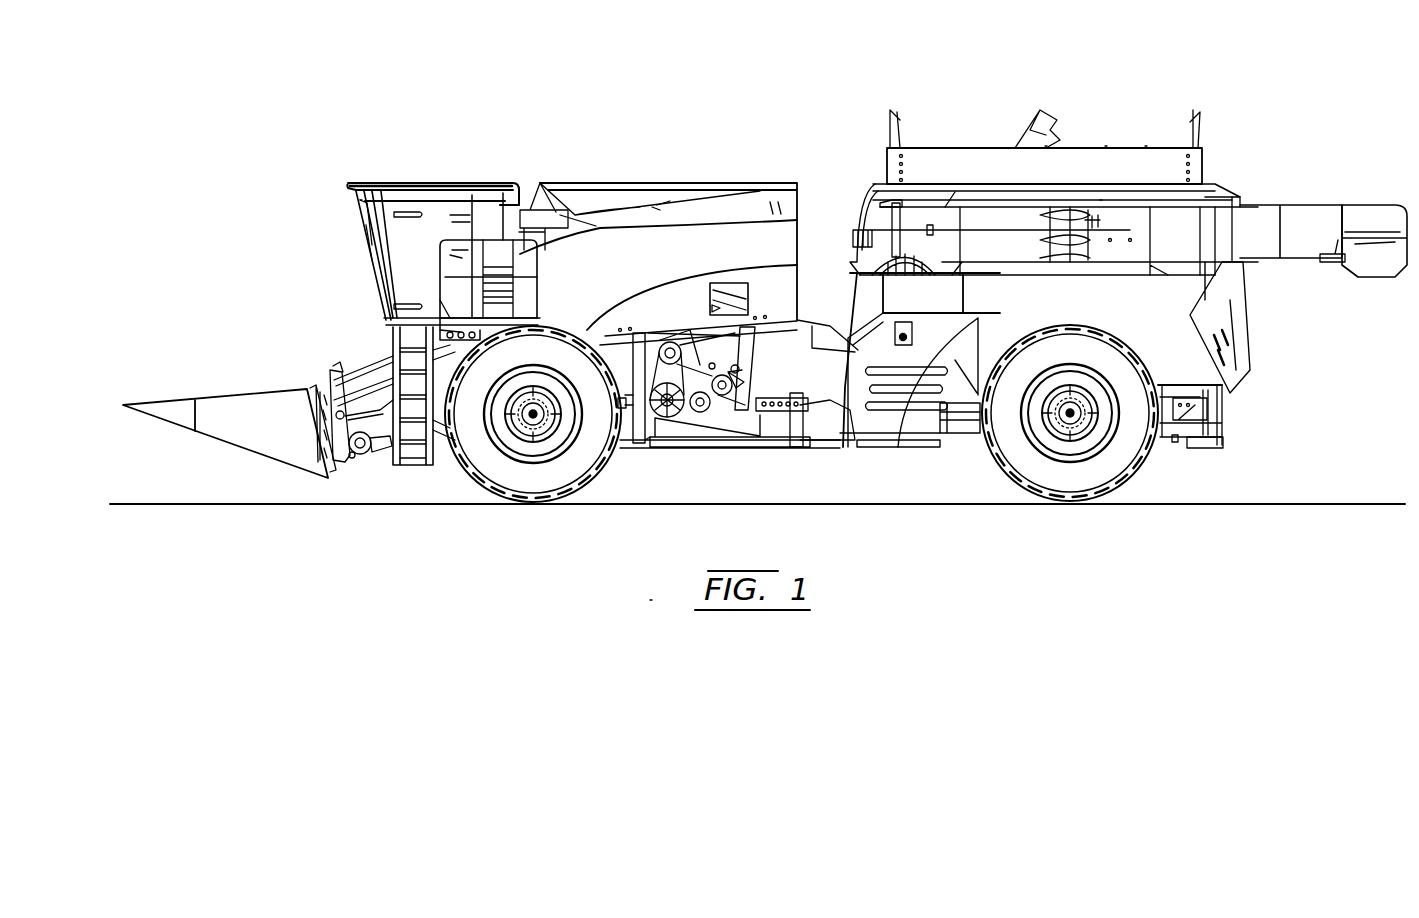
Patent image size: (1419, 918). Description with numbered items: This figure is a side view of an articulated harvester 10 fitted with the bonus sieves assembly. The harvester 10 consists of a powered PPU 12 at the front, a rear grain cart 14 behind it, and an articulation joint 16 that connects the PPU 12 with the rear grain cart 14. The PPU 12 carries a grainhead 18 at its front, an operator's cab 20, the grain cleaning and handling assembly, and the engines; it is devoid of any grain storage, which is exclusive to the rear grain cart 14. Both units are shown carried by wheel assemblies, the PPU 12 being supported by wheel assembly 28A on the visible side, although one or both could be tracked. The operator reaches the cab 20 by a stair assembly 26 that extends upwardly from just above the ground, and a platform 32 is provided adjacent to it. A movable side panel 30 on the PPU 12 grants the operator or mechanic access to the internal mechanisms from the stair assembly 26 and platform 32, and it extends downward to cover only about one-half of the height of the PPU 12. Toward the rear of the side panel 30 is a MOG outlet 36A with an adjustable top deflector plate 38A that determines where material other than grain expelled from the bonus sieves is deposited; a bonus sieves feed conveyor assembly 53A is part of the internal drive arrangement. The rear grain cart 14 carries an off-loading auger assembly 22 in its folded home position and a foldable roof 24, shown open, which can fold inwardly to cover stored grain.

The articulated harvester 10 is at (529, 108).
The powered PPU 12 is at (328, 152).
The rear grain cart 14 is at (1193, 95).
The articulation joint 16 is at (699, 464).
The grainhead 18 is at (263, 387).
The operator's cab 20 is at (440, 184).
The off-loading auger assembly 22 is at (1303, 218).
The foldable roof 24 is at (929, 158).
The stair assembly 26 is at (403, 466).
The wheel assembly 28A is at (530, 489).
The movable side panel 30 is at (765, 247).
The platform 32 is at (445, 308).
The MOG outlet 36A is at (712, 308).
The top deflector plate 38A is at (724, 286).
The bonus sieves feed conveyor assembly 53A is at (736, 378).